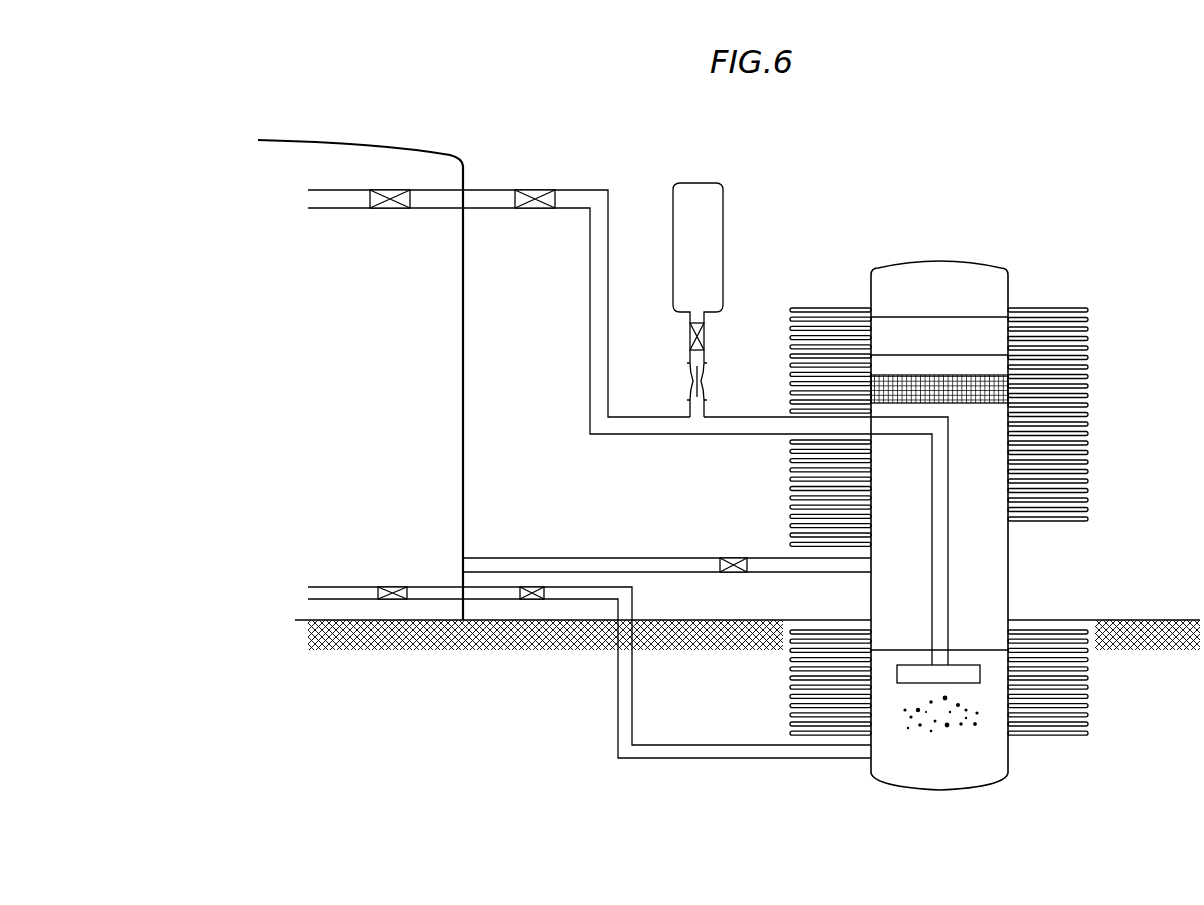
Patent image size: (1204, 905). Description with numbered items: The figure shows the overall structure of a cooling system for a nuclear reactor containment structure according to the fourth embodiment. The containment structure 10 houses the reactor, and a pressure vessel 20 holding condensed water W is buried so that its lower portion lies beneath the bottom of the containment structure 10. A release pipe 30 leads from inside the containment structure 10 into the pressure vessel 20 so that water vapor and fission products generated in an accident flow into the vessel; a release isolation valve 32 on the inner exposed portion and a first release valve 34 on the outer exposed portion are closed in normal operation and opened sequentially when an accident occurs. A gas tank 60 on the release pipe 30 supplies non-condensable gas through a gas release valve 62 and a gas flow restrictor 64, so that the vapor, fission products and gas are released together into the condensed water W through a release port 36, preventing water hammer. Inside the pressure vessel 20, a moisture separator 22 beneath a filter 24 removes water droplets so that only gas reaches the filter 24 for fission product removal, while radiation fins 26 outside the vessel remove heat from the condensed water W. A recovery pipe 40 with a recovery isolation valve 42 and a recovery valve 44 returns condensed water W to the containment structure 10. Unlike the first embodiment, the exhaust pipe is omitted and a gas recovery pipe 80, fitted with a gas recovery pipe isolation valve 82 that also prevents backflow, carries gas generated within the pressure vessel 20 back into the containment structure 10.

The containment structure 10 is at (466, 262).
The pressure vessel 20 is at (1000, 560).
The moisture separator 22 is at (1010, 382).
The filter 24 is at (982, 327).
The radiation fins 26 is at (1088, 457).
The release pipe 30 is at (590, 356).
The release isolation valve 32 is at (385, 208).
The first release valve 34 is at (521, 190).
The release port 36 is at (897, 672).
The recovery pipe 40 is at (620, 713).
The recovery isolation valve 42 is at (393, 587).
The recovery valve 44 is at (528, 587).
The gas tank 60 is at (723, 200).
The gas release valve 62 is at (704, 332).
The gas flow restrictor 64 is at (704, 380).
The gas recovery pipe 80 is at (672, 556).
The gas recovery pipe isolation valve 82 is at (735, 556).
The condensed water W is at (1000, 752).